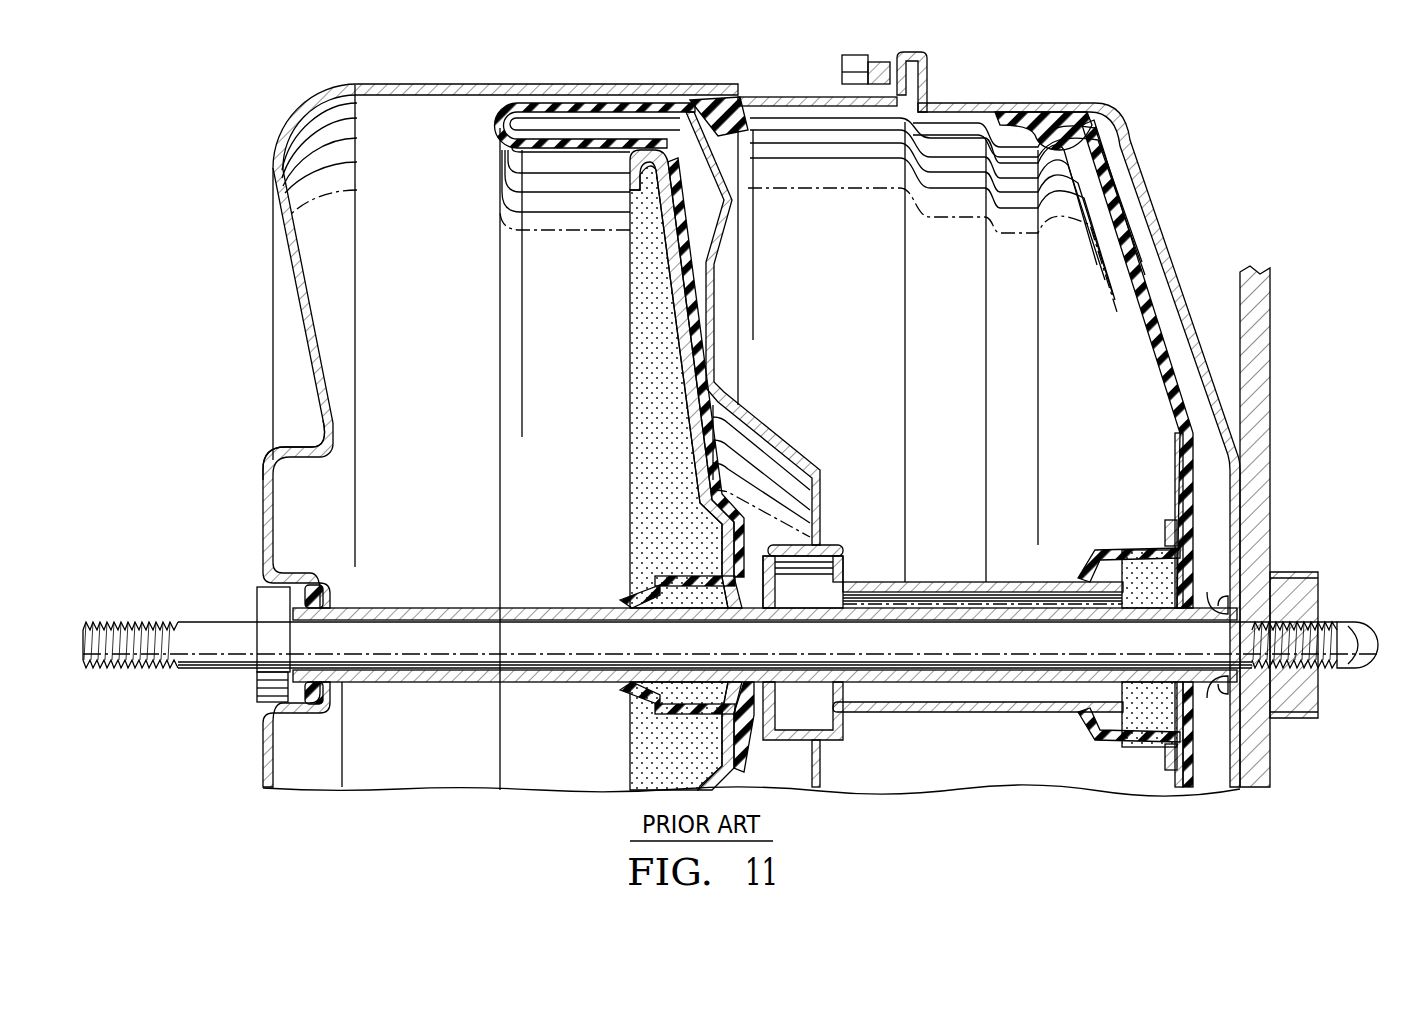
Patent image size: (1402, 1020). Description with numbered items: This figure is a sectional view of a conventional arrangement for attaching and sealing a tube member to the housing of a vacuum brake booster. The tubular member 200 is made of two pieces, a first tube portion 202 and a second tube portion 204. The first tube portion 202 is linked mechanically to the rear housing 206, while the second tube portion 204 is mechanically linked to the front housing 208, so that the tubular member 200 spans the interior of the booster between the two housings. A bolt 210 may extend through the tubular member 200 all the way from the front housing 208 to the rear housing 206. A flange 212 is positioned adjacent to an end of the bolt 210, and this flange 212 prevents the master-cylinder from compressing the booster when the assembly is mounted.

The tubular member 200 is at (458, 718).
The first tube portion 202 is at (943, 682).
The second tube portion 204 is at (317, 713).
The rear housing 206 is at (1237, 740).
The front housing 208 is at (267, 473).
The bolt 210 is at (197, 622).
The flange 212 is at (255, 690).